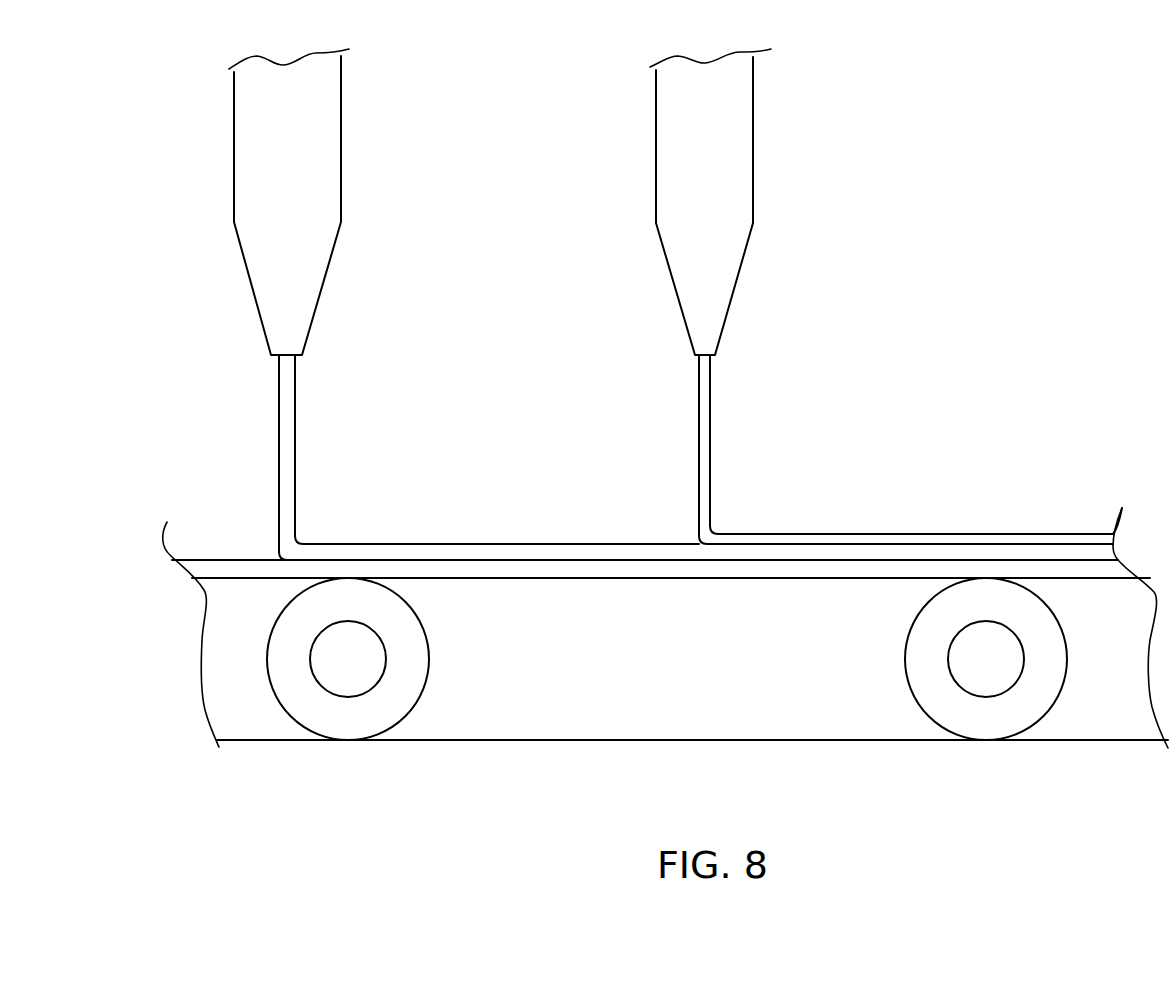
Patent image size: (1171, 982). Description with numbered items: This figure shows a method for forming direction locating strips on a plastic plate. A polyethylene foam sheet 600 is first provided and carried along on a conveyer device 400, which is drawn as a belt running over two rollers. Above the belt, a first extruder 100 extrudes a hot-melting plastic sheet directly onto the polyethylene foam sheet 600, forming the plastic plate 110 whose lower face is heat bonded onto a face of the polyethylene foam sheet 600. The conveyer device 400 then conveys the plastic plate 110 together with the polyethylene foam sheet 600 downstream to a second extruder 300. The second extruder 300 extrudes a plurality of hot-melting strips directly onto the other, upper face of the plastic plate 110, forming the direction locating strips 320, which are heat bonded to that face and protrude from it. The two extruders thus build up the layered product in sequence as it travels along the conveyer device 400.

The first extruder 100 is at (330, 177).
The second extruder 300 is at (745, 163).
The plastic plate 110 is at (413, 548).
The direction locating strips 320 is at (860, 537).
The polyethylene foam sheet 600 is at (255, 562).
The conveyer device 400 is at (833, 735).